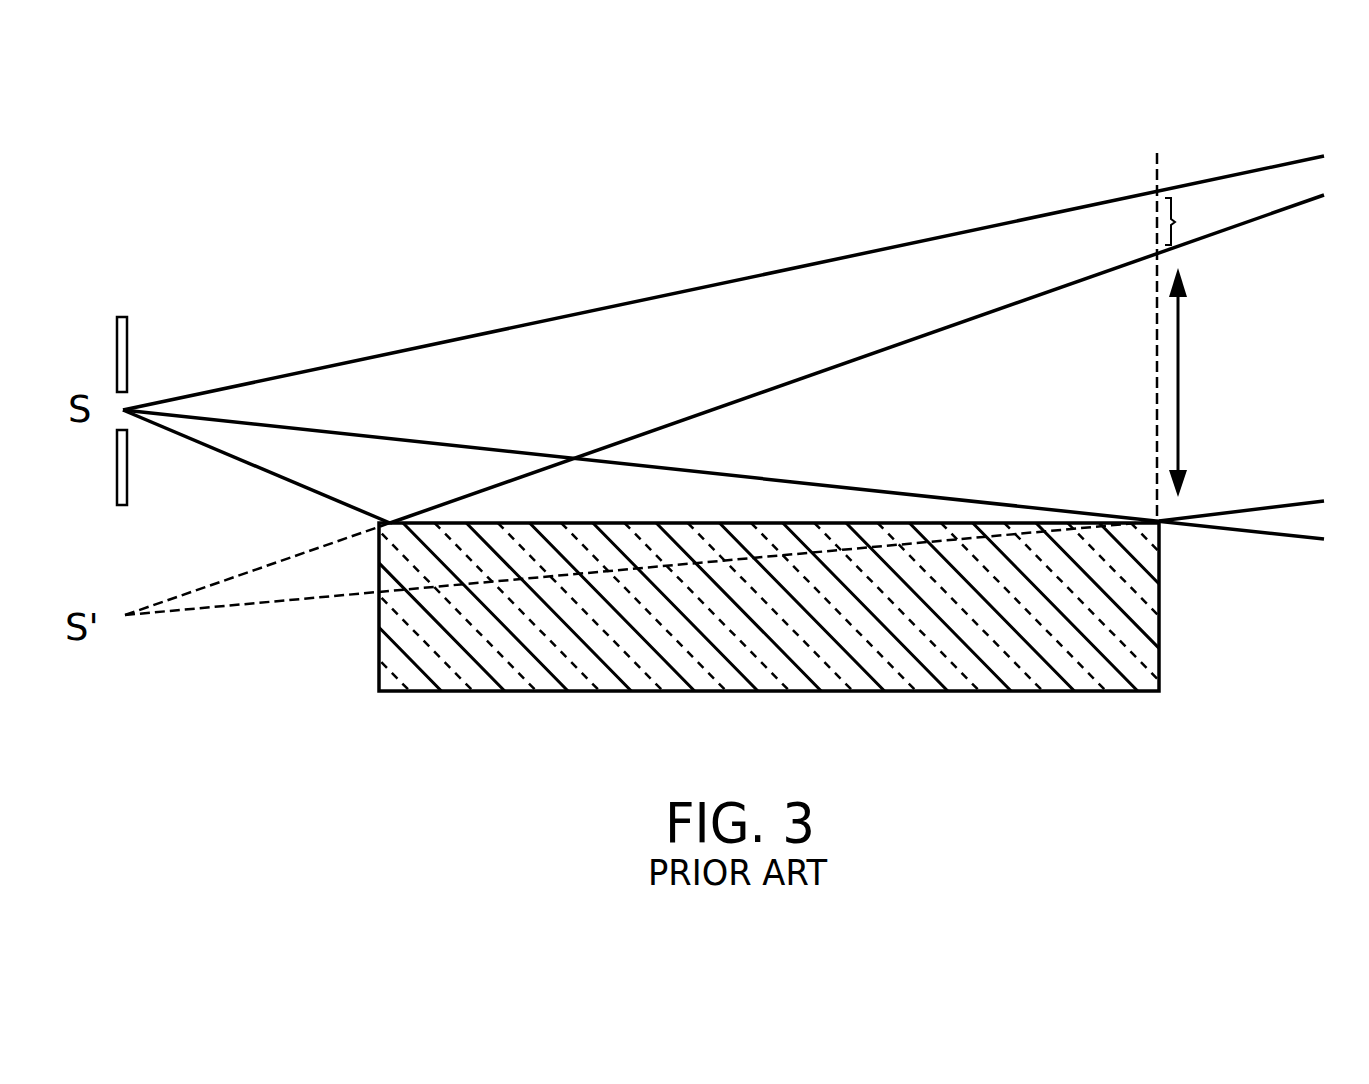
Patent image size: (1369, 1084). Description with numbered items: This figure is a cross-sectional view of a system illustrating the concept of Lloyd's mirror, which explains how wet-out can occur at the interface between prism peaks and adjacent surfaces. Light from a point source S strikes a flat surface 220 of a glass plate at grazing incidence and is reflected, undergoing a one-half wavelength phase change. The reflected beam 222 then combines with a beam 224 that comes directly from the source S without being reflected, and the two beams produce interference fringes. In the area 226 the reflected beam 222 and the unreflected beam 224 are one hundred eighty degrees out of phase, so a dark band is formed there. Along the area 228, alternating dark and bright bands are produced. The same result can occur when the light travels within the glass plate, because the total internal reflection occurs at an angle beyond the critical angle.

The flat surface 220 is at (663, 523).
The reflected beam 222 is at (835, 367).
The beam 224 is at (757, 276).
The area 226 is at (1178, 222).
The area 228 is at (1180, 382).